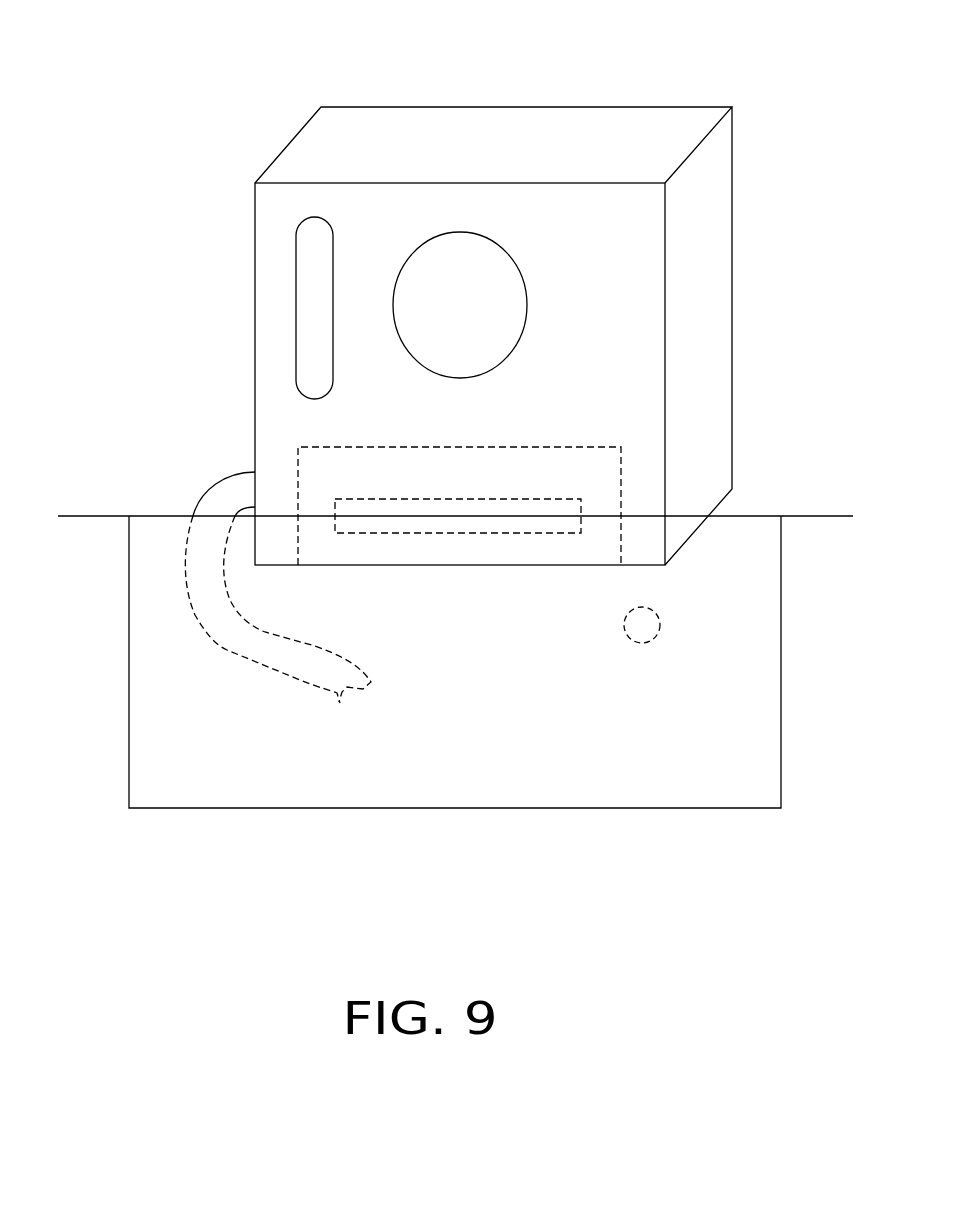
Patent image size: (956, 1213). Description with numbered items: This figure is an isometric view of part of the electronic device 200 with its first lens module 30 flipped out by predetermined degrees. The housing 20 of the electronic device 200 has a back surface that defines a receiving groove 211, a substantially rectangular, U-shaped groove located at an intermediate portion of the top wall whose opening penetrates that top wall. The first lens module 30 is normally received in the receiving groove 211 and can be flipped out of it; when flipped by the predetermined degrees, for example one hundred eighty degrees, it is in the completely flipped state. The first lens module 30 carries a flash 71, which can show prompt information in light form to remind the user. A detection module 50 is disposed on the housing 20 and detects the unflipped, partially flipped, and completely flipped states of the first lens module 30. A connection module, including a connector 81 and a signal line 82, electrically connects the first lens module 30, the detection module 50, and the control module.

The electronic device 200 is at (477, 45).
The first lens module 30 is at (457, 260).
The flash 71 is at (313, 300).
The connector 81 is at (465, 518).
The housing 20 is at (112, 516).
The receiving groove 211 is at (148, 600).
The signal line 82 is at (227, 648).
The detection module 50 is at (642, 625).